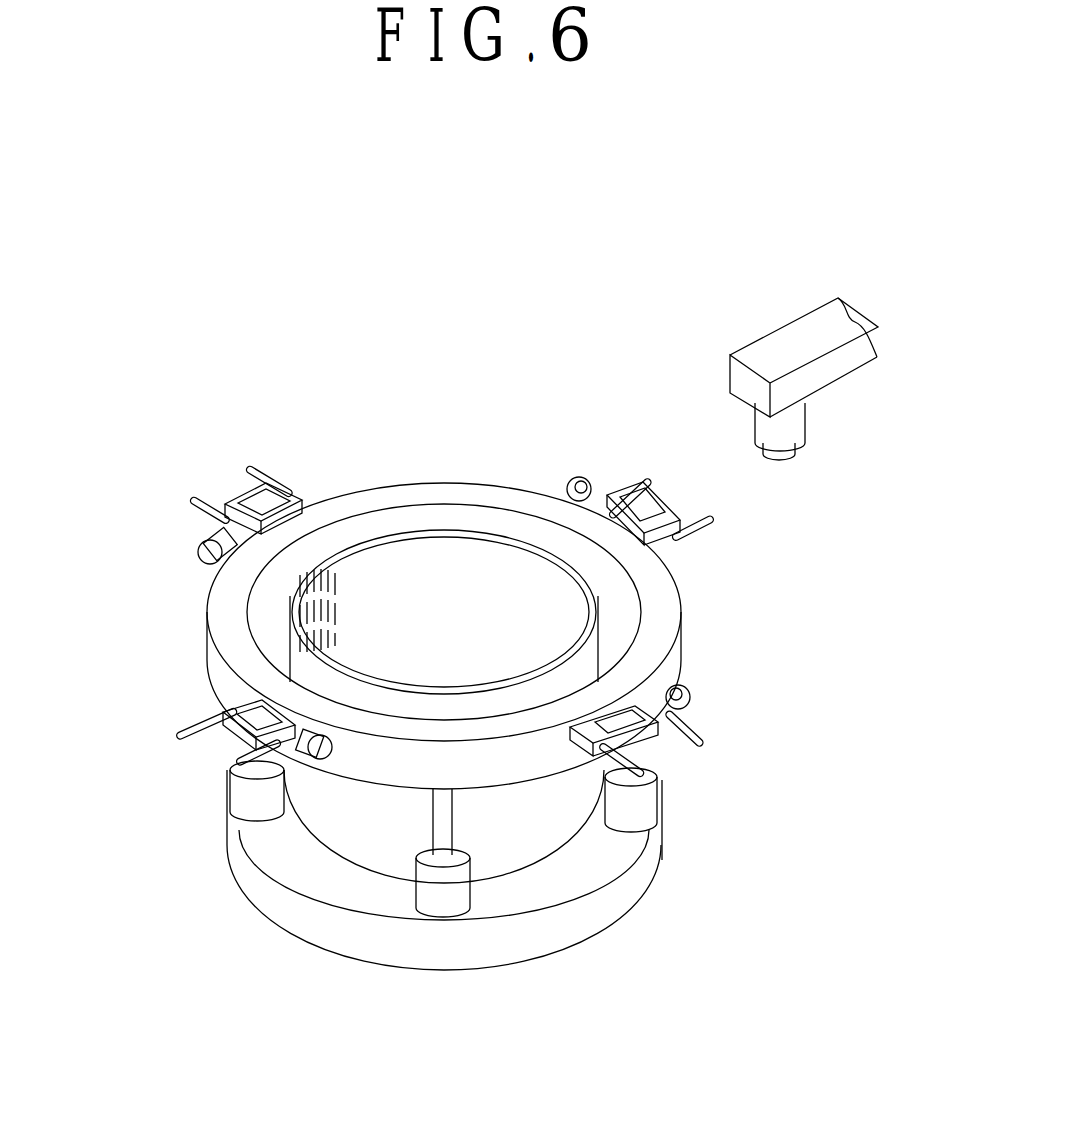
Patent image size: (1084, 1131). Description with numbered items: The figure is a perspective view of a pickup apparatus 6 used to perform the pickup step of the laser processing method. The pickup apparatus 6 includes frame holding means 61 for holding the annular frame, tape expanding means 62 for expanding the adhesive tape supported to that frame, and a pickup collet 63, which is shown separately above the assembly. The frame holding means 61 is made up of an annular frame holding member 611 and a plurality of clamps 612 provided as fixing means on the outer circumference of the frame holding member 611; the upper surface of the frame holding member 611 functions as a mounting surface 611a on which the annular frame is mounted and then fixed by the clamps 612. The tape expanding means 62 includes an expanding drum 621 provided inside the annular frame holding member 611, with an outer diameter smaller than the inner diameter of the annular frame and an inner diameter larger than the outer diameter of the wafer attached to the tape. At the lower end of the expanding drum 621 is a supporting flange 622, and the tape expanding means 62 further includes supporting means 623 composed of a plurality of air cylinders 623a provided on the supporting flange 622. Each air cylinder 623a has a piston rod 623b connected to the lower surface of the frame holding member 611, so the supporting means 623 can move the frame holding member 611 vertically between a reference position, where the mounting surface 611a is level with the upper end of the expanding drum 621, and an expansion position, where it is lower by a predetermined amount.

The pickup apparatus 6 is at (582, 437).
The frame holding means 61 is at (447, 487).
The annular frame holding member 611 is at (424, 490).
The mounting surface 611a is at (383, 497).
The clamps 612 is at (268, 468).
The expanding drum 621 is at (472, 530).
The tape expanding means 62 is at (347, 968).
The supporting flange 622 is at (280, 848).
The supporting means 623 is at (479, 902).
The air cylinders 623a is at (440, 895).
The piston rod 623b is at (433, 821).
The pickup collet 63 is at (779, 325).